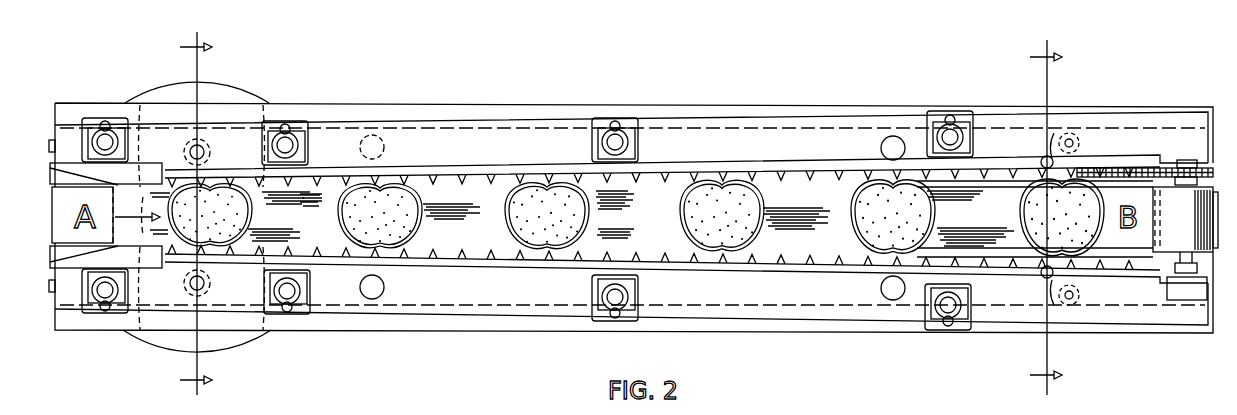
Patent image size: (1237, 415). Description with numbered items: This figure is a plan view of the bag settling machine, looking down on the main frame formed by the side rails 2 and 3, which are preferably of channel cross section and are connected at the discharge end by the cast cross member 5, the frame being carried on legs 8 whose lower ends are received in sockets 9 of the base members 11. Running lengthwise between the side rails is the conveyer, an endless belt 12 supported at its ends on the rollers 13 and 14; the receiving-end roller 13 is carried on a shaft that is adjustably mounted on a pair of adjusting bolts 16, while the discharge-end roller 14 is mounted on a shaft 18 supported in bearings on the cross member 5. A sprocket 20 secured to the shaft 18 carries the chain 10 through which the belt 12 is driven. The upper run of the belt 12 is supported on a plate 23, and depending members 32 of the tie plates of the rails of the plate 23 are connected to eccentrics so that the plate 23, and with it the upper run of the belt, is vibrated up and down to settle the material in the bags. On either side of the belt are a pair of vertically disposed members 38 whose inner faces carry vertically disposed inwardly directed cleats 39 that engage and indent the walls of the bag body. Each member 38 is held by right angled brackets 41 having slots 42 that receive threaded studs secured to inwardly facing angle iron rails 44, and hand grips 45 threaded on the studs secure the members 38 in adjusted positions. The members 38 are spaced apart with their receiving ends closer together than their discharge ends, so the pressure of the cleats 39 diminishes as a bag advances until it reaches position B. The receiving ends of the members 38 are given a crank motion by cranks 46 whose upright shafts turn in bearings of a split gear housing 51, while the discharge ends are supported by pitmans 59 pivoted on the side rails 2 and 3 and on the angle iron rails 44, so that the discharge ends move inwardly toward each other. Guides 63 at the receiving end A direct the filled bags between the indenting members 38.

The side rail 2 is at (545, 325).
The side rail 3 is at (537, 107).
The cross member 5 is at (197, 211).
The leg 8 is at (375, 138).
The socket 9 is at (1046, 217).
The chain 10 is at (1110, 167).
The base member 11 is at (613, 352).
The endless belt 12 is at (813, 200).
The roller 13 is at (65, 183).
The roller 14 is at (1174, 252).
The adjusting bolt 16 is at (50, 138).
The shaft 18 is at (1186, 274).
The sprocket 20 is at (1187, 160).
The plate 23 is at (1029, 257).
The depending member 32 is at (395, 213).
The vertically disposed member 38 is at (473, 168).
The cleat 39 is at (328, 240).
The right angled bracket 41 is at (88, 120).
The slot 42 is at (285, 125).
The angle iron rail 44 is at (797, 125).
The hand grip 45 is at (113, 130).
The crank 46 is at (208, 149).
The gear housing 51 is at (228, 87).
The pitman 59 is at (1056, 128).
The guide 63 is at (143, 167).